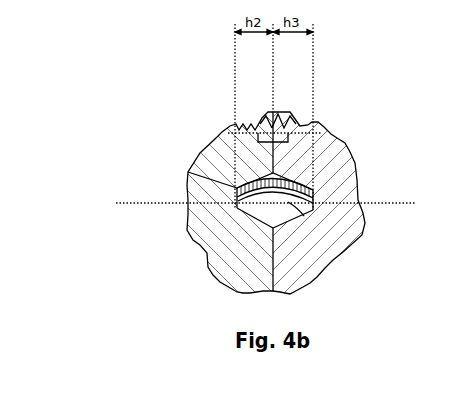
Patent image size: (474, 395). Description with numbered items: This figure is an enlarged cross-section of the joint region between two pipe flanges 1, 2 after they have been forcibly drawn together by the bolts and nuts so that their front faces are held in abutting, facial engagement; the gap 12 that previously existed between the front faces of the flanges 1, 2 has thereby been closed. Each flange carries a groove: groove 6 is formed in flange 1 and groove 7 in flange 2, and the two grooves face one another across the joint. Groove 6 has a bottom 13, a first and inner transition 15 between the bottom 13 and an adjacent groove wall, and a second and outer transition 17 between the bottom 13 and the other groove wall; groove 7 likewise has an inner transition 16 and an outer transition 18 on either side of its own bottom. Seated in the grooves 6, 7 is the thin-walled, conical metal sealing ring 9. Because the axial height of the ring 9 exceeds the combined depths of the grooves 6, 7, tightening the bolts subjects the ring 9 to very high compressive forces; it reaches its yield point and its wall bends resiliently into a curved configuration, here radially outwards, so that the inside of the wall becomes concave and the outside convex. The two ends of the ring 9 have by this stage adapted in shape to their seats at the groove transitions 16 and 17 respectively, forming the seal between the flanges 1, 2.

The flange 1 is at (216, 138).
The flange 2 is at (323, 147).
The groove 6 is at (237, 205).
The groove 7 is at (312, 182).
The sealing ring 9 is at (288, 202).
The gap 12 is at (184, 203).
The bottom 13 is at (354, 203).
The first and inner transition 15 is at (235, 213).
The first and inner transition 16 is at (310, 215).
The second and outer transition 17 is at (238, 190).
The second and outer transition 18 is at (312, 189).